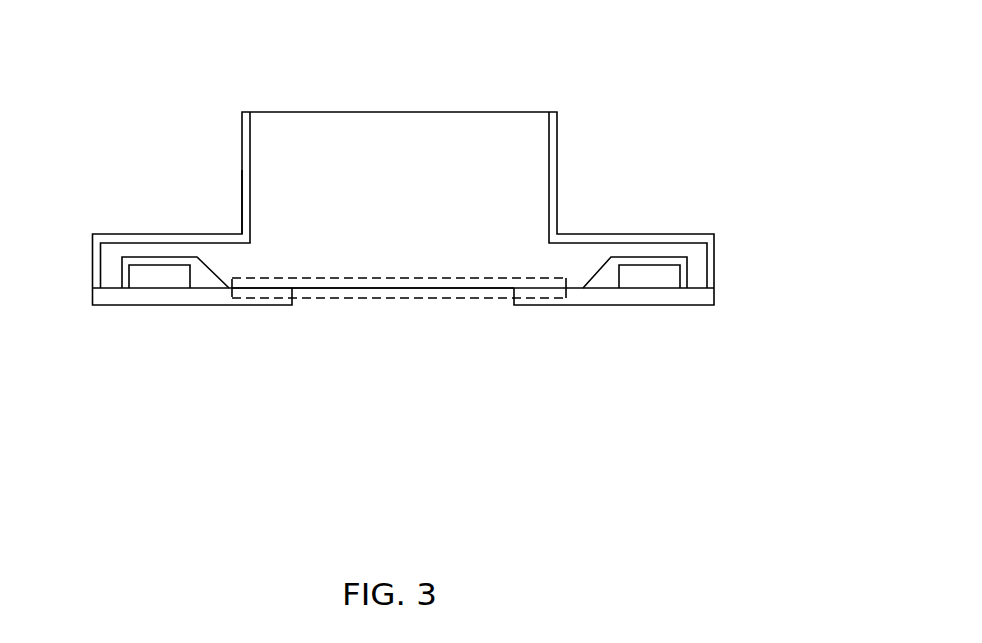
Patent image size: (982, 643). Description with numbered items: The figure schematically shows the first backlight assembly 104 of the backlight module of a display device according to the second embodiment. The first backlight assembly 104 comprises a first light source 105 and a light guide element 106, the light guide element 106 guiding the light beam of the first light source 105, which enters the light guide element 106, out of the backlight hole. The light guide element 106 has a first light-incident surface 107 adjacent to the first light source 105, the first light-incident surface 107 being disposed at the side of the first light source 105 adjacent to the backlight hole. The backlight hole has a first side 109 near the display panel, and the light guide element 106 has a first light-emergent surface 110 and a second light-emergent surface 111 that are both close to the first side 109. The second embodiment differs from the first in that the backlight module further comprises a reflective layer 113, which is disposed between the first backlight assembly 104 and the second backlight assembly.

The first backlight assembly 104 is at (238, 401).
The first light source 105 is at (152, 278).
The light guide element 106 is at (348, 262).
The first light-incident surface 107 is at (593, 280).
The first side 109 is at (404, 148).
The first light-emergent surface 110 is at (433, 112).
The second light-emergent surface 111 is at (433, 300).
The reflective layer 113 is at (245, 177).